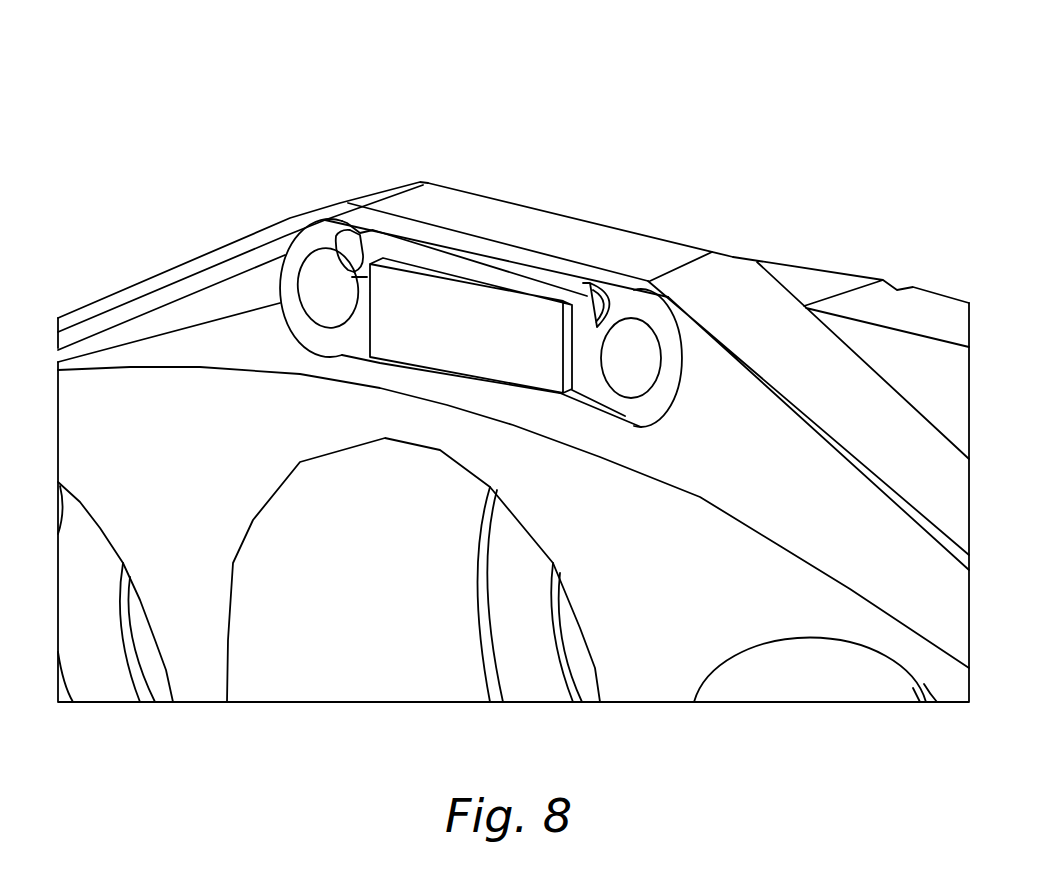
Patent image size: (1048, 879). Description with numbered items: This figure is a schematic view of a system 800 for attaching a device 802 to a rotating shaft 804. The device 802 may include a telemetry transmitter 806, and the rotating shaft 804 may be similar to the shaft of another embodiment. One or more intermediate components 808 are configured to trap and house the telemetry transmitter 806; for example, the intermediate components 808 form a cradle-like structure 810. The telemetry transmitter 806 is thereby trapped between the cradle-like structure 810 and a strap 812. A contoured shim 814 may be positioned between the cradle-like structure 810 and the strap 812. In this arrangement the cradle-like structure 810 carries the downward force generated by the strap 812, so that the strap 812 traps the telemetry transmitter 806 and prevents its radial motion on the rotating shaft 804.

The system 800 is at (976, 36).
The device 802 is at (542, 373).
The rotating shaft 804 is at (808, 284).
The telemetry transmitter 806 is at (375, 333).
The intermediate components 808 is at (579, 196).
The cradle-like structure 810 is at (648, 414).
The strap 812 is at (660, 236).
The contoured shim 814 is at (358, 252).